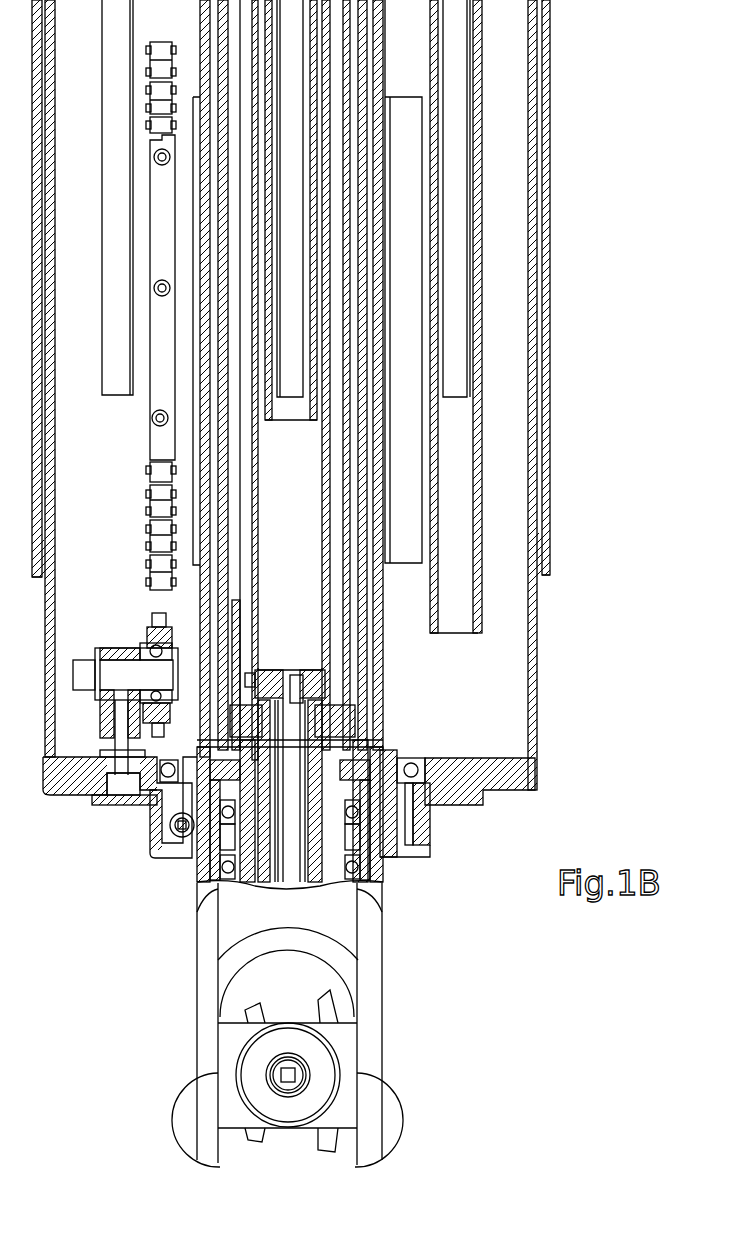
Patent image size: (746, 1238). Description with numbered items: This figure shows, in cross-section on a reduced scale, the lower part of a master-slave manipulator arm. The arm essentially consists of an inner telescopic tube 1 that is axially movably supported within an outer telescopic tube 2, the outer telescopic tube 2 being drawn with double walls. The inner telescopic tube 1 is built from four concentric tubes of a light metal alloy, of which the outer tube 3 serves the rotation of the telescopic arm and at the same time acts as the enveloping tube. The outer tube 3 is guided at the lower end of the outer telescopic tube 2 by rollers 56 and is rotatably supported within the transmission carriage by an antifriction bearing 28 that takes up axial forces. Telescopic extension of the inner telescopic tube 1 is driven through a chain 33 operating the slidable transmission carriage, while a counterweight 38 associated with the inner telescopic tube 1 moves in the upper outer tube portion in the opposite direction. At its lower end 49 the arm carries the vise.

The inner telescopic tube 1 is at (383, 883).
The outer telescopic tube 2 is at (537, 482).
The outer tube 3 is at (200, 440).
The antifriction bearing 28 is at (413, 755).
The chain 33 is at (172, 55).
The counterweight 38 is at (420, 488).
The lower end 49 is at (300, 1078).
The rollers 56 is at (167, 831).